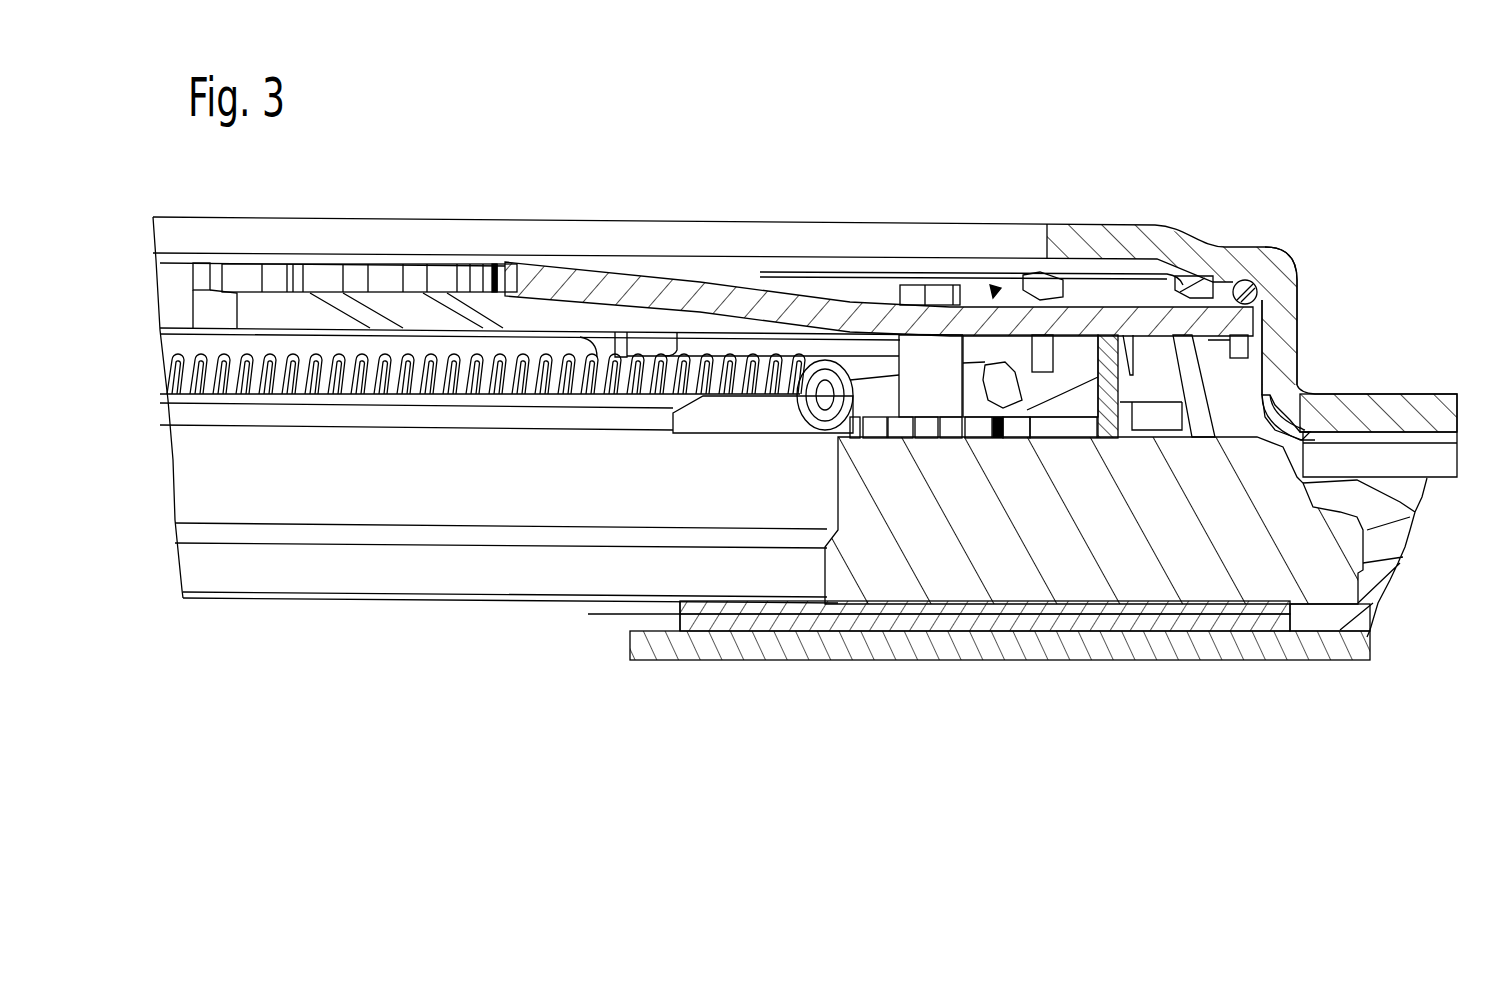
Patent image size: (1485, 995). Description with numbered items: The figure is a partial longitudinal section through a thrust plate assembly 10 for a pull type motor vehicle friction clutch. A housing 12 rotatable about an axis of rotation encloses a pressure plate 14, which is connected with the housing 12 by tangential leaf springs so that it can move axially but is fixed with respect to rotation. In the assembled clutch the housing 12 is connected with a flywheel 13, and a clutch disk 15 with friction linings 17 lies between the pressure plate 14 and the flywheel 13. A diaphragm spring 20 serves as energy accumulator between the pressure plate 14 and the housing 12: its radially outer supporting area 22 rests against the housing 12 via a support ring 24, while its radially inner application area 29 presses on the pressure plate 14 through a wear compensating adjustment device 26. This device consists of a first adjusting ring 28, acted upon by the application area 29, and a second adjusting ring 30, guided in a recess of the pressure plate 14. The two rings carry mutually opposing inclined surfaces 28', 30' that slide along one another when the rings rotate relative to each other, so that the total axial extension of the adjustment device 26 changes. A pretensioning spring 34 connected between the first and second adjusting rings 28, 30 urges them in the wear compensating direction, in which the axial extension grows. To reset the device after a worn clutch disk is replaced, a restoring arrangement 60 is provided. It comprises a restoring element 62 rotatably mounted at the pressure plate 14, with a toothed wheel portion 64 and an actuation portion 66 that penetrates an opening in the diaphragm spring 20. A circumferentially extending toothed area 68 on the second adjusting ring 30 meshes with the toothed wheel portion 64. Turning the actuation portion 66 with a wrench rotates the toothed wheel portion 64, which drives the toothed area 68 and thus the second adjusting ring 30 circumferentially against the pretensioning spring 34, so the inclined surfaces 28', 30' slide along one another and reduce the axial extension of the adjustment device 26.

The thrust plate assembly 10 is at (786, 146).
The housing 12 is at (1155, 225).
The flywheel 13 is at (1237, 662).
The pressure plate 14 is at (970, 573).
The clutch disk 15 is at (604, 621).
The friction linings 17 is at (683, 605).
The diaphragm spring 20 is at (857, 313).
The supporting area 22 is at (1258, 284).
The support ring 24 is at (1166, 358).
The wear compensating adjustment device 26 is at (1297, 302).
The first adjusting ring 28 is at (1235, 248).
The inclined surface 28' is at (1095, 270).
The application area 29 is at (1110, 335).
The second adjusting ring 30 is at (1247, 387).
The inclined surface 30' is at (1030, 540).
The pretensioning spring 34 is at (508, 357).
The restoring arrangement 60 is at (995, 288).
The restoring element 62 is at (930, 387).
The toothed wheel portion 64 is at (880, 423).
The actuation portion 66 is at (935, 287).
The toothed area 68 is at (1037, 440).